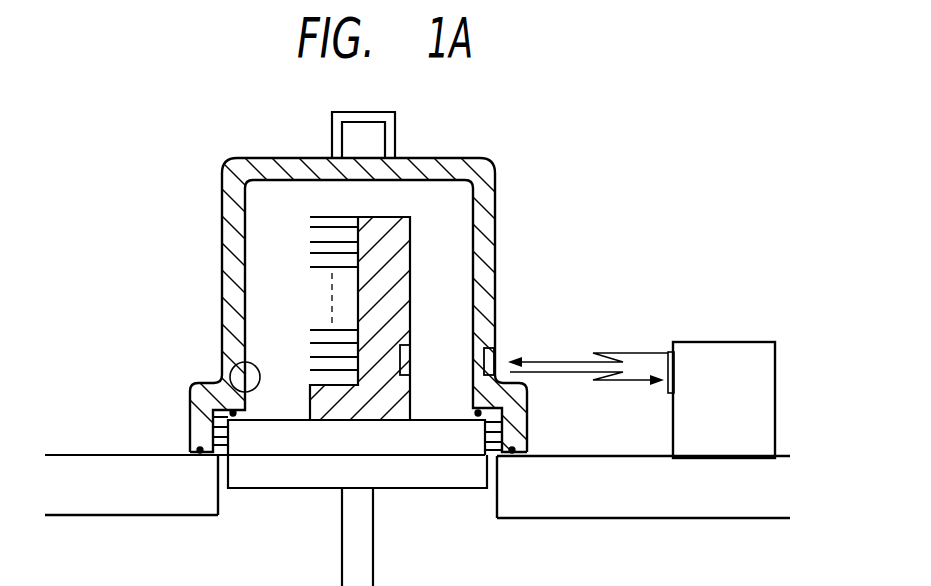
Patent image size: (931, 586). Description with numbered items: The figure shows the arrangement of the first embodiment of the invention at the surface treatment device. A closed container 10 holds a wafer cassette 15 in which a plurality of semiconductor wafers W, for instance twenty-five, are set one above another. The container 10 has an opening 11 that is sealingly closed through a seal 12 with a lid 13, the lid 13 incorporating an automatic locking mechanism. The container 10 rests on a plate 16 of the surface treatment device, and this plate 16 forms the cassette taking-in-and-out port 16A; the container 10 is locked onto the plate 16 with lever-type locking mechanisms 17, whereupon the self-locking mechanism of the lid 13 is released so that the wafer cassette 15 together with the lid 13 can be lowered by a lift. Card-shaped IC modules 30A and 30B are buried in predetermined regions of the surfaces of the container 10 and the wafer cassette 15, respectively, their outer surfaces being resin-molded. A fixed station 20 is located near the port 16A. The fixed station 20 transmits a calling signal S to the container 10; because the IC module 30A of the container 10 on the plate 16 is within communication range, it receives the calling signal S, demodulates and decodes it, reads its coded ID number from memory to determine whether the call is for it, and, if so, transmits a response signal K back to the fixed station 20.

The closed container 10 is at (255, 165).
The opening 11 is at (232, 368).
The seal 12 is at (192, 408).
The lid 13 is at (287, 447).
The wafer cassette 15 is at (412, 247).
The plate 16 is at (107, 507).
The port 16A is at (222, 515).
The lever-type locking mechanism 17 is at (423, 482).
The fixed station 20 is at (768, 375).
The card-shaped IC module 30A is at (508, 585).
The card-shaped IC module 30B is at (413, 357).
The semiconductor wafer W is at (312, 252).
The calling signal S is at (588, 350).
The response signal K is at (587, 383).